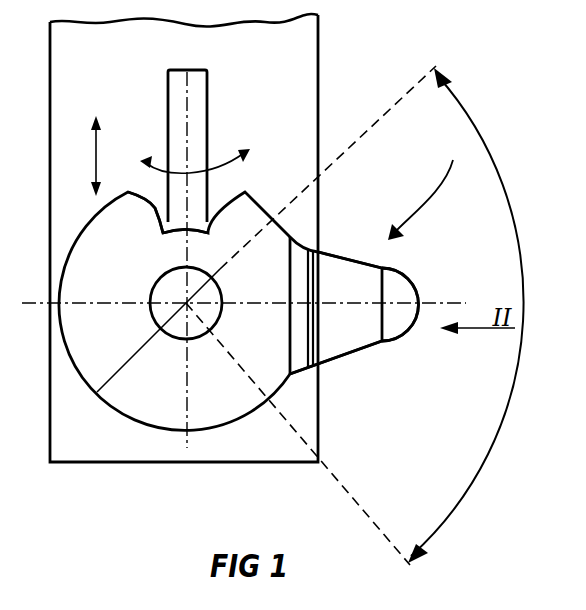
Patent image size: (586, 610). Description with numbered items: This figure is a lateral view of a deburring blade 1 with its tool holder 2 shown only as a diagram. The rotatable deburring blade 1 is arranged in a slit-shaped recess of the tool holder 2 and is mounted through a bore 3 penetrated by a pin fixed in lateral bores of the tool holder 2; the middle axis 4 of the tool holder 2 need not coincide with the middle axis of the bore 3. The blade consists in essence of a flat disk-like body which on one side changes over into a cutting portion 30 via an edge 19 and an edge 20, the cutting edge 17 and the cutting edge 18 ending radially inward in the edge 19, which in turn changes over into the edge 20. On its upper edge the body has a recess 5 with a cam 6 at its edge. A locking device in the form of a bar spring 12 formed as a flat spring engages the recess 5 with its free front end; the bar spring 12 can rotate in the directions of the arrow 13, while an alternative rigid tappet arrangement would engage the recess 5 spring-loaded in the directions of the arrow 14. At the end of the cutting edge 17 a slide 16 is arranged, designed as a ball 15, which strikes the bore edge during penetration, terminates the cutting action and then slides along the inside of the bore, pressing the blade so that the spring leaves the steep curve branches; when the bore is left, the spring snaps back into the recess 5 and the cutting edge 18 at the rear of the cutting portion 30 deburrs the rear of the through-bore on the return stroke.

The deburring blade 1 is at (112, 328).
The tool holder 2 is at (108, 436).
The bore 3 is at (195, 321).
The middle axis 4 is at (183, 386).
The recess 5 is at (153, 213).
The cam 6 is at (156, 214).
The bar spring 12 is at (168, 141).
The arrow 13 is at (185, 170).
The arrow 14 is at (95, 161).
The ball 15 is at (405, 309).
The slide 16 is at (420, 287).
The cutting edge 17 is at (356, 352).
The cutting edge 18 is at (353, 260).
The edge 19 is at (311, 322).
The edge 20 is at (293, 283).
The cutting portion 30 is at (429, 186).